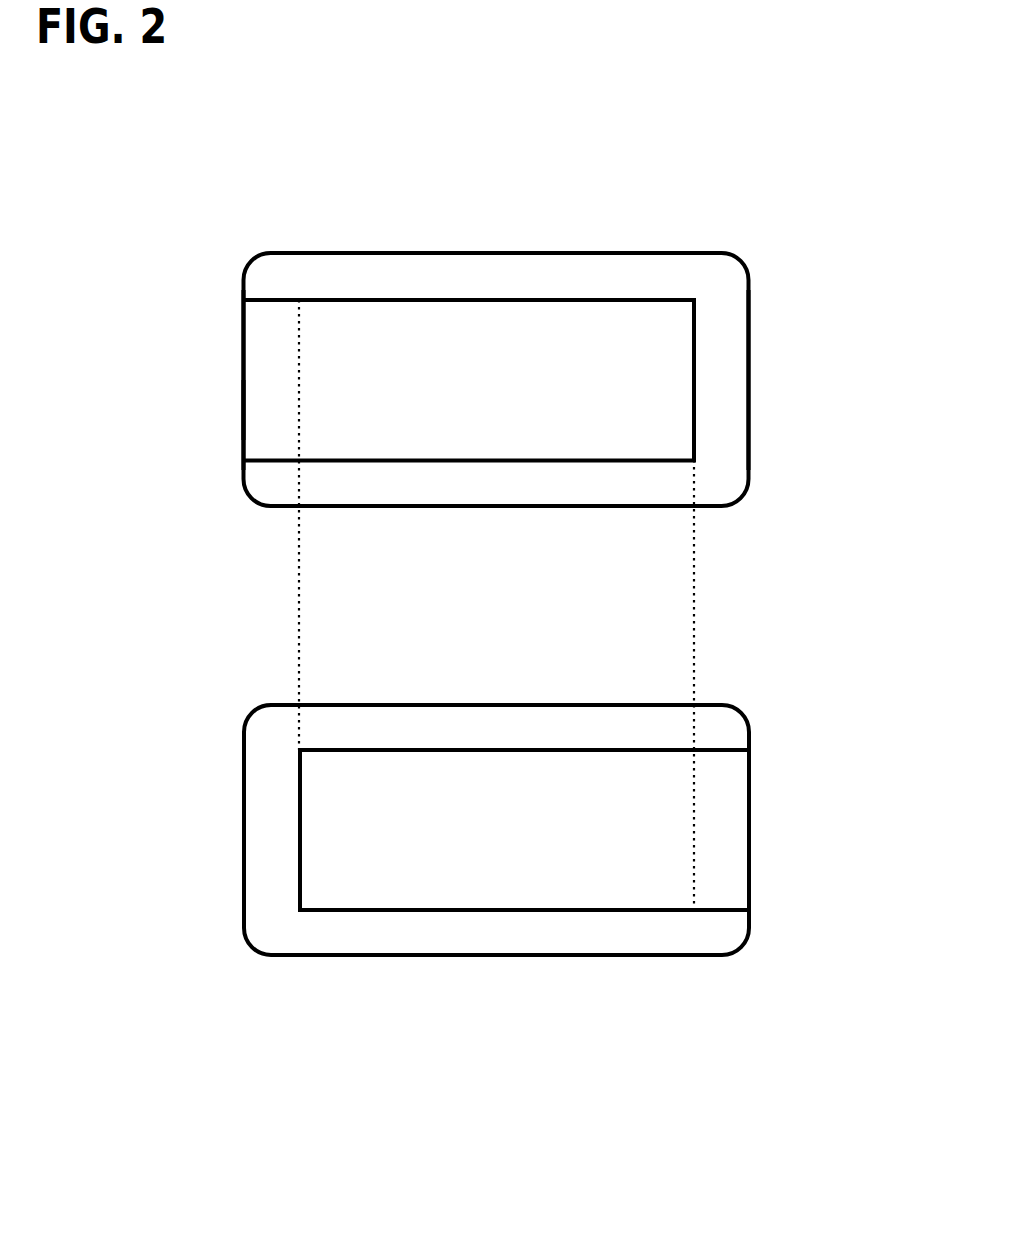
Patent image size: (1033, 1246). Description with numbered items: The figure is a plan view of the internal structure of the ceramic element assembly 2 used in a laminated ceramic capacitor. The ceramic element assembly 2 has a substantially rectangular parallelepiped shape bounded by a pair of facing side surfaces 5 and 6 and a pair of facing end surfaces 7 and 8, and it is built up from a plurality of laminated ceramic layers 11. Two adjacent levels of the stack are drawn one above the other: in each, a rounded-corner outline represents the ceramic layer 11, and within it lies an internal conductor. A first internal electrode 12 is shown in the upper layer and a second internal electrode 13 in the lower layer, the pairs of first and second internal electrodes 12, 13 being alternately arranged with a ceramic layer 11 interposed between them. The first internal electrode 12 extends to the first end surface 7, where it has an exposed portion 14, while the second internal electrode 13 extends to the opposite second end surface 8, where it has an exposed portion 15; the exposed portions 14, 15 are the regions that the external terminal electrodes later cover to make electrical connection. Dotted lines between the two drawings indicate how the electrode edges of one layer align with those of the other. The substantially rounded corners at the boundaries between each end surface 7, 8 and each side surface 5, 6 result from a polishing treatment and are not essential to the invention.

The ceramic element assembly 2 is at (146, 181).
The side surface 5 is at (478, 506).
The side surface 6 is at (532, 253).
The first end surface 7 is at (243, 360).
The second end surface 8 is at (748, 397).
The ceramic layer 11 is at (623, 263).
The first internal electrode 12 is at (387, 292).
The second internal electrode 13 is at (387, 742).
The exposed portion 14 is at (243, 407).
The exposed portion 15 is at (749, 778).